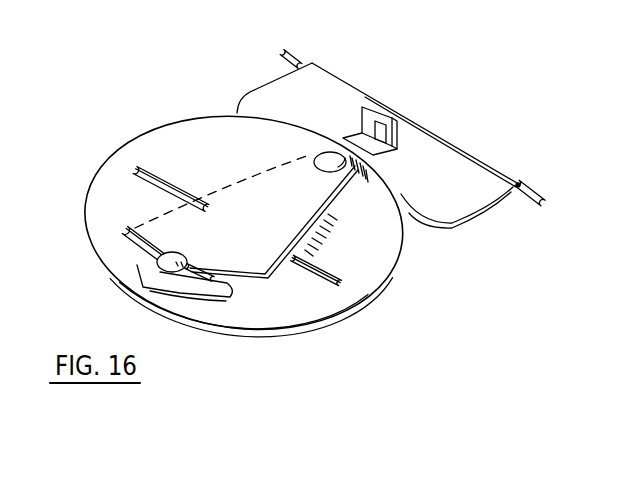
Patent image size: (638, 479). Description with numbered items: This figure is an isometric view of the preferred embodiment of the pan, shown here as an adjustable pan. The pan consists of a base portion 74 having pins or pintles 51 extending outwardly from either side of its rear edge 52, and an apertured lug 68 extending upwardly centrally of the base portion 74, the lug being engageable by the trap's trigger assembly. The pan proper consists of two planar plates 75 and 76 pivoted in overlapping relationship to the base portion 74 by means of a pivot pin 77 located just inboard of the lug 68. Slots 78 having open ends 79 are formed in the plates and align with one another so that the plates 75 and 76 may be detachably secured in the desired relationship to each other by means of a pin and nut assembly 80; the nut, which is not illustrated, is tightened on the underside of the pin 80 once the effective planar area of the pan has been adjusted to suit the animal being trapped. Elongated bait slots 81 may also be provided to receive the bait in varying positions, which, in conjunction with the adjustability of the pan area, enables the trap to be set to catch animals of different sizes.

The pintle 51 is at (540, 194).
The rear edge 52 is at (411, 115).
The apertured lug 68 is at (400, 137).
The base portion 74 is at (475, 194).
The planar plate 75 is at (383, 257).
The planar plate 76 is at (176, 135).
The pivot pin 77 is at (320, 160).
The slot 78 is at (232, 277).
The open end 79 is at (240, 283).
The pin and nut assembly 80 is at (183, 254).
The bait slot 81 is at (320, 275).